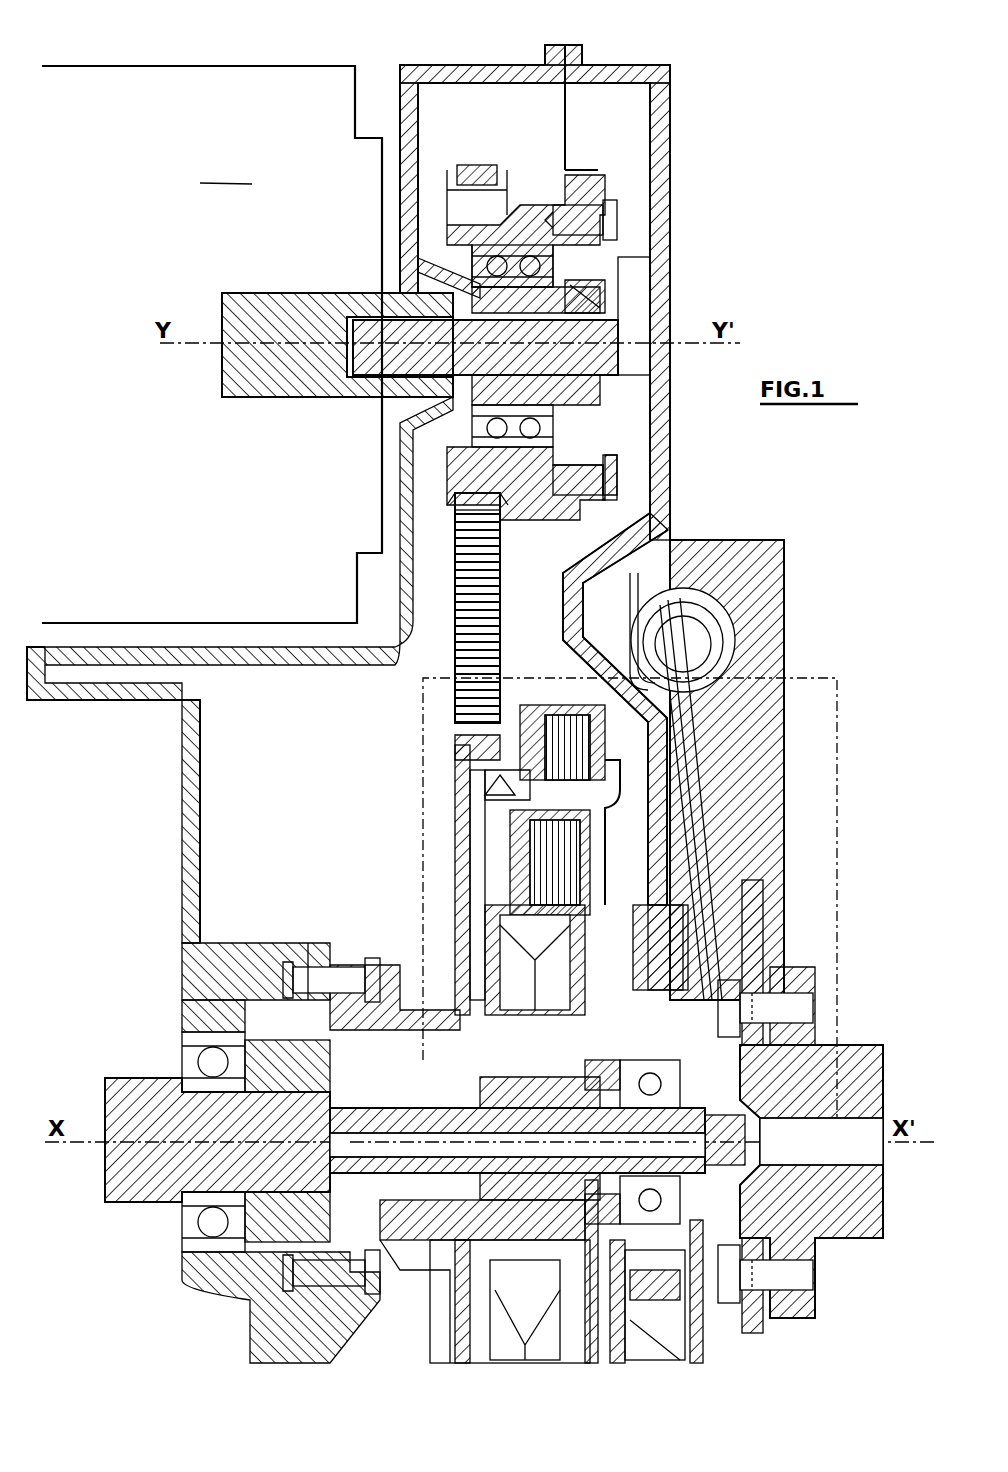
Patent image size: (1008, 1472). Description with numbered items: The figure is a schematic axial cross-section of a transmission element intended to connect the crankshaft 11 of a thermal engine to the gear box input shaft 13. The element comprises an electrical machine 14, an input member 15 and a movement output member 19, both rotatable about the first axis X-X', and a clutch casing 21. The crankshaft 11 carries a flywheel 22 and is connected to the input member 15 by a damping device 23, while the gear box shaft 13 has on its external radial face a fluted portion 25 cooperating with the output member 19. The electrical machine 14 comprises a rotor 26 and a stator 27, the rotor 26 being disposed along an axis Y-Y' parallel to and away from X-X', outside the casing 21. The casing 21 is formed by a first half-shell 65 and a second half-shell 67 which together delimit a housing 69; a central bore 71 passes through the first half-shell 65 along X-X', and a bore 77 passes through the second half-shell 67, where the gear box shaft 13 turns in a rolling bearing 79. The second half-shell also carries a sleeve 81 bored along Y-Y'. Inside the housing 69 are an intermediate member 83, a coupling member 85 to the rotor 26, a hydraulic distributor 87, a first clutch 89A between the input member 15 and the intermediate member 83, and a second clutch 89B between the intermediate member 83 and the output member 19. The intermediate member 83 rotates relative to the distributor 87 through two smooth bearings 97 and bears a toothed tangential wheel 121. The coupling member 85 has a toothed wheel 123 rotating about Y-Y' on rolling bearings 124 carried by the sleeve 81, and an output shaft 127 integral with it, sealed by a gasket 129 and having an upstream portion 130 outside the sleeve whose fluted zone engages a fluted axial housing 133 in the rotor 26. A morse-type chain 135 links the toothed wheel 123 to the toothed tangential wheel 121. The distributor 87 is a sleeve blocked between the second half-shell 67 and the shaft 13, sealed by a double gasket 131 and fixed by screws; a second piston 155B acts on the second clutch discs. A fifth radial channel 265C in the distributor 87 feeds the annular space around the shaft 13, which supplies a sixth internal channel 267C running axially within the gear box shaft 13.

The crankshaft 11 is at (868, 1045).
The gear box input shaft 13 is at (110, 1090).
The electrical machine 14 is at (207, 178).
The input member 15 is at (640, 862).
The movement output member 19 is at (745, 948).
The clutch casing 21 is at (680, 490).
The flywheel 22 is at (782, 580).
The damping device 23 is at (733, 628).
The fluted portion 25 is at (537, 1138).
The rotor 26 is at (262, 398).
The stator 27 is at (313, 76).
The first half-shell 65 is at (670, 130).
The second half-shell 67 is at (562, 44).
The housing 69 is at (640, 408).
The central bore 71 is at (803, 998).
The bore 77 is at (282, 1186).
The rolling bearing 79 is at (192, 1241).
The sleeve 81 is at (440, 293).
The intermediate member 83 is at (440, 1000).
The coupling member 85 is at (608, 262).
The hydraulic distributor 87 is at (300, 985).
The first clutch 89A is at (608, 764).
The second clutch 89B is at (492, 846).
The smooth bearings 97 is at (385, 1020).
The toothed tangential wheel 121 is at (455, 726).
The toothed wheel 123 is at (455, 216).
The rolling bearings 124 is at (478, 252).
The output shaft 127 is at (485, 347).
The gasket 129 is at (605, 300).
The upstream portion 130 is at (367, 398).
The double gasket 131 is at (292, 1110).
The fluted axial housing 133 is at (345, 340).
The chain 135 is at (475, 166).
The second piston 155B is at (466, 925).
The fifth radial channel 265C is at (196, 1036).
The sixth internal channel 267C is at (330, 1245).